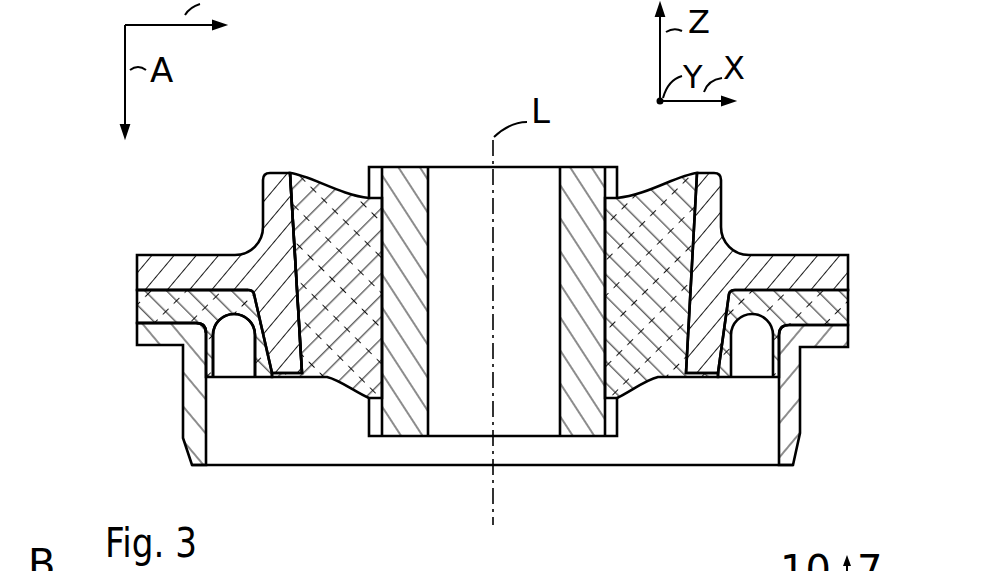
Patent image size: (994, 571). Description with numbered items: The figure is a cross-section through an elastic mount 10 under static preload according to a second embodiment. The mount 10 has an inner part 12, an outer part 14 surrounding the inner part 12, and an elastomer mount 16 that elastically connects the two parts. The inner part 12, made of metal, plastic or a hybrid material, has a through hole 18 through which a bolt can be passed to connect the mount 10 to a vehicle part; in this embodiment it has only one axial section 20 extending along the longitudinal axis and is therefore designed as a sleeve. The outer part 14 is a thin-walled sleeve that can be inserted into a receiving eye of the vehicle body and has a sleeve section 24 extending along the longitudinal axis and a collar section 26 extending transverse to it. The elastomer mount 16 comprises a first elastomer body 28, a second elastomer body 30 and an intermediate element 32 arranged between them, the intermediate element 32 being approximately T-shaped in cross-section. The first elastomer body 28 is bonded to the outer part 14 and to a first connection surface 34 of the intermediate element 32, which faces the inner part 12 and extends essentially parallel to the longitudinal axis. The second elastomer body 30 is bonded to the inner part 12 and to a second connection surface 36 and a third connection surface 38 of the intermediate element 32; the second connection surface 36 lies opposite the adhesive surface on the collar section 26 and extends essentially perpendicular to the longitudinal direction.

The mount 10 is at (745, 125).
The inner part 12 is at (587, 183).
The outer part 14 is at (790, 407).
The elastomer mount 16 is at (759, 201).
The through hole 18 is at (430, 193).
The axial section 20 is at (570, 235).
The sleeve section 24 is at (195, 405).
The collar section 26 is at (158, 332).
The first elastomer body 28 is at (337, 215).
The second elastomer body 30 is at (162, 297).
The intermediate element 32 is at (250, 257).
The first connection surface 34 is at (298, 194).
The second connection surface 36 is at (202, 290).
The third connection surface 38 is at (263, 328).